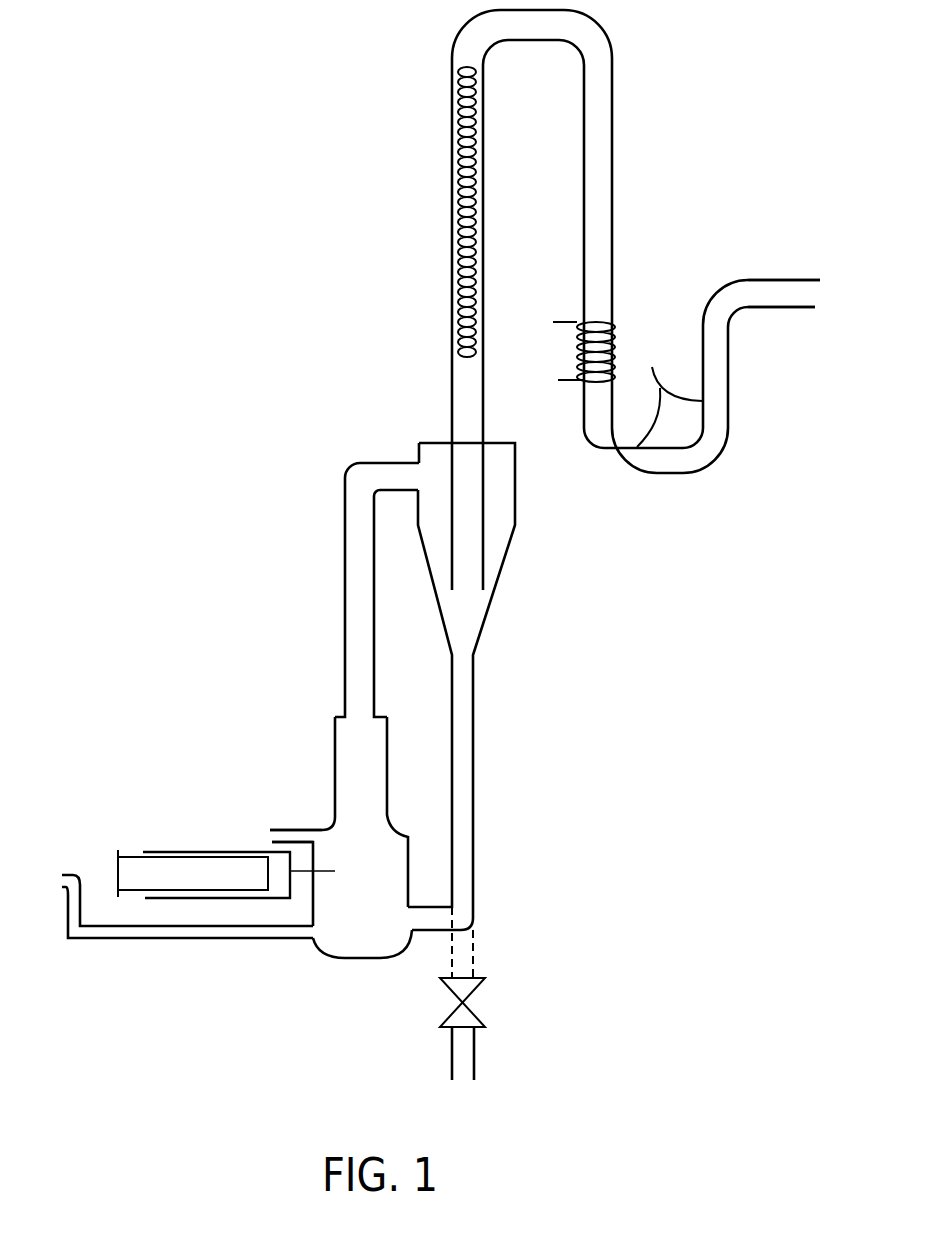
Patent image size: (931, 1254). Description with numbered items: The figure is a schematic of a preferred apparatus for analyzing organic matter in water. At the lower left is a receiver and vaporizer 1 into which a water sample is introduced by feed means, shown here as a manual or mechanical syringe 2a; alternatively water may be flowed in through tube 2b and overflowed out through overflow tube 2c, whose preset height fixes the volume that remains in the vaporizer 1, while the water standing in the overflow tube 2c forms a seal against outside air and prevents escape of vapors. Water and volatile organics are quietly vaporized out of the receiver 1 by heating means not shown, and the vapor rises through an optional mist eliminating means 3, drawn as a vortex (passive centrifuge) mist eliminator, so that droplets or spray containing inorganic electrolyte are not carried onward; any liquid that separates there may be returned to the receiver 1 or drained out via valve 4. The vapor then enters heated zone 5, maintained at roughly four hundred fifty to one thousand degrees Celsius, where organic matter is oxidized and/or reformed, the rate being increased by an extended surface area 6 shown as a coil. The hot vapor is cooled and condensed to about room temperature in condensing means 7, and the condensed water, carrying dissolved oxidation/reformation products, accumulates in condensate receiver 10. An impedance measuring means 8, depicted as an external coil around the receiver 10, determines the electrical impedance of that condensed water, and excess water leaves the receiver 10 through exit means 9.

The receiver and vaporizer 1 is at (317, 945).
The syringe 2a is at (195, 847).
The tube 2b is at (308, 826).
The overflow tube 2c is at (65, 913).
The mist eliminating means 3 is at (503, 578).
The valve 4 is at (482, 1000).
The heated zone 5 is at (450, 117).
The extended surface area 6 is at (477, 192).
The condensing means 7 is at (613, 117).
The impedance measuring means 8 is at (560, 357).
The exit means 9 is at (818, 295).
The condensate receiver 10 is at (612, 298).